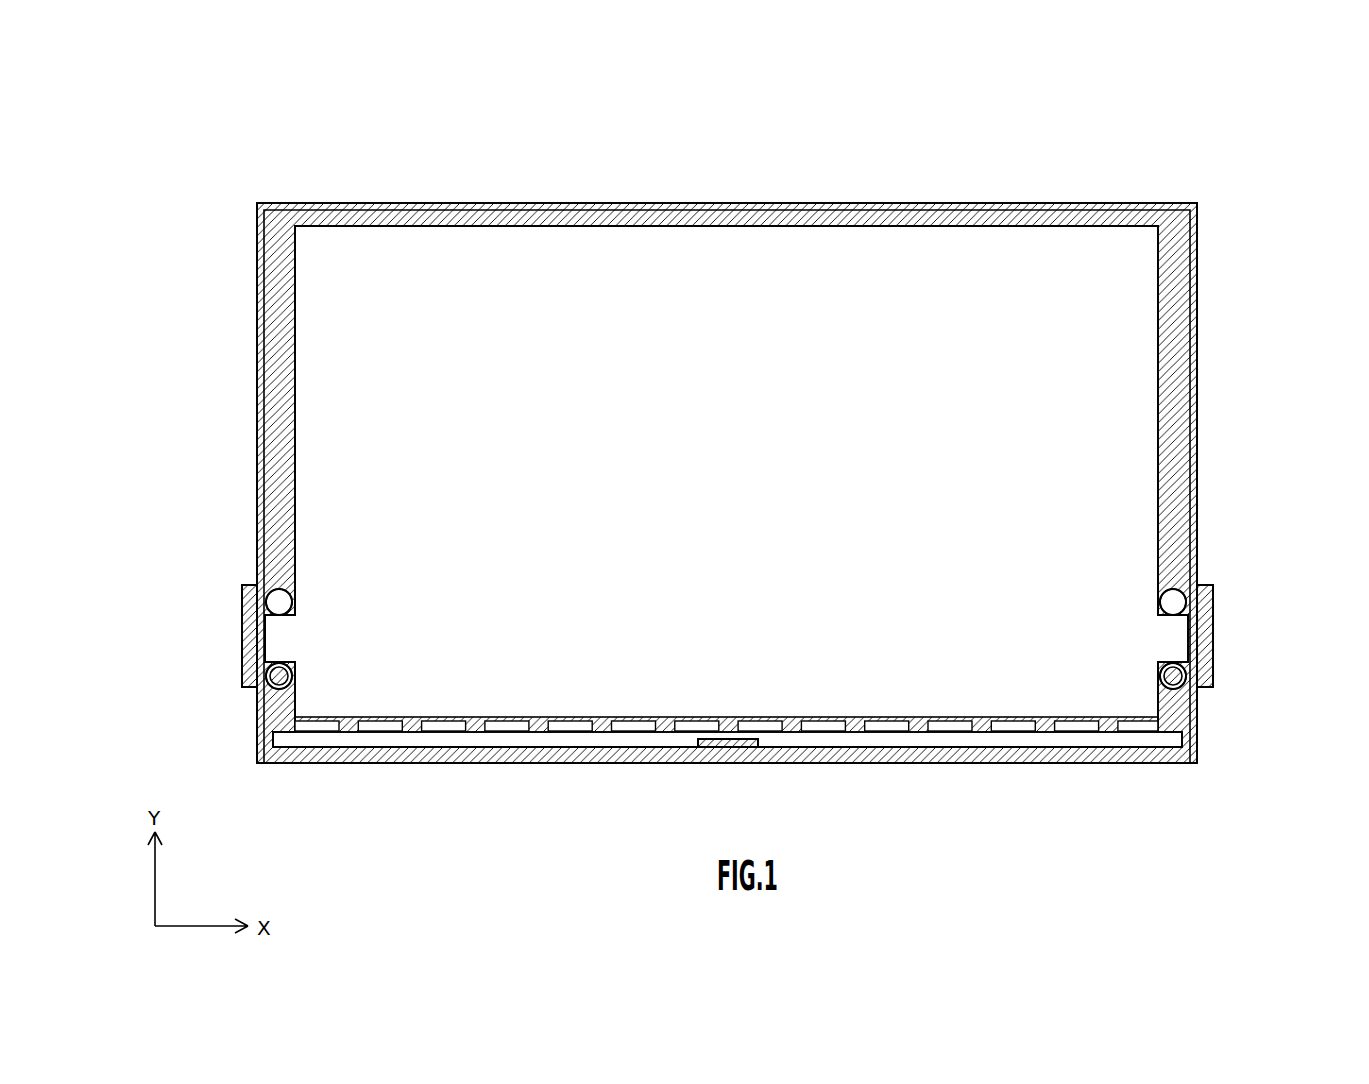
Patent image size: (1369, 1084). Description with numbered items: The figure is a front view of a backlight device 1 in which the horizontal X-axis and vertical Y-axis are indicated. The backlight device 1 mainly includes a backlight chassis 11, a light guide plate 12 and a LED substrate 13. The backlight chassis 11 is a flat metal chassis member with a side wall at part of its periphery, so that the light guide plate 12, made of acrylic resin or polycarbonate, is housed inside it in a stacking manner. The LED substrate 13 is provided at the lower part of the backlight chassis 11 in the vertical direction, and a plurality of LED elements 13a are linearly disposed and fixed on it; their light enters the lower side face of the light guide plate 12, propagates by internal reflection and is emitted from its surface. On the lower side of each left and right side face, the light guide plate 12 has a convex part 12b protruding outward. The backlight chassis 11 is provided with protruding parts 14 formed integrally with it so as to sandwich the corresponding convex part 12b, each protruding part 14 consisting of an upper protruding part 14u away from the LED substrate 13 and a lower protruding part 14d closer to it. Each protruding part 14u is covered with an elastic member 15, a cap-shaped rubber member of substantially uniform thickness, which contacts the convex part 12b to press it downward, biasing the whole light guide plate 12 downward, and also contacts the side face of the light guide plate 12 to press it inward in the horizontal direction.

The backlight device 1 is at (318, 116).
The backlight chassis 11 is at (280, 305).
The light guide plate 12 is at (320, 362).
The convex part 12b is at (280, 640).
The LED substrate 13 is at (345, 740).
The LED elements 13a is at (490, 730).
The protruding part 14 is at (132, 560).
The protruding part 14u is at (241, 590).
The protruding part 14d is at (241, 676).
The elastic member 15 is at (280, 600).